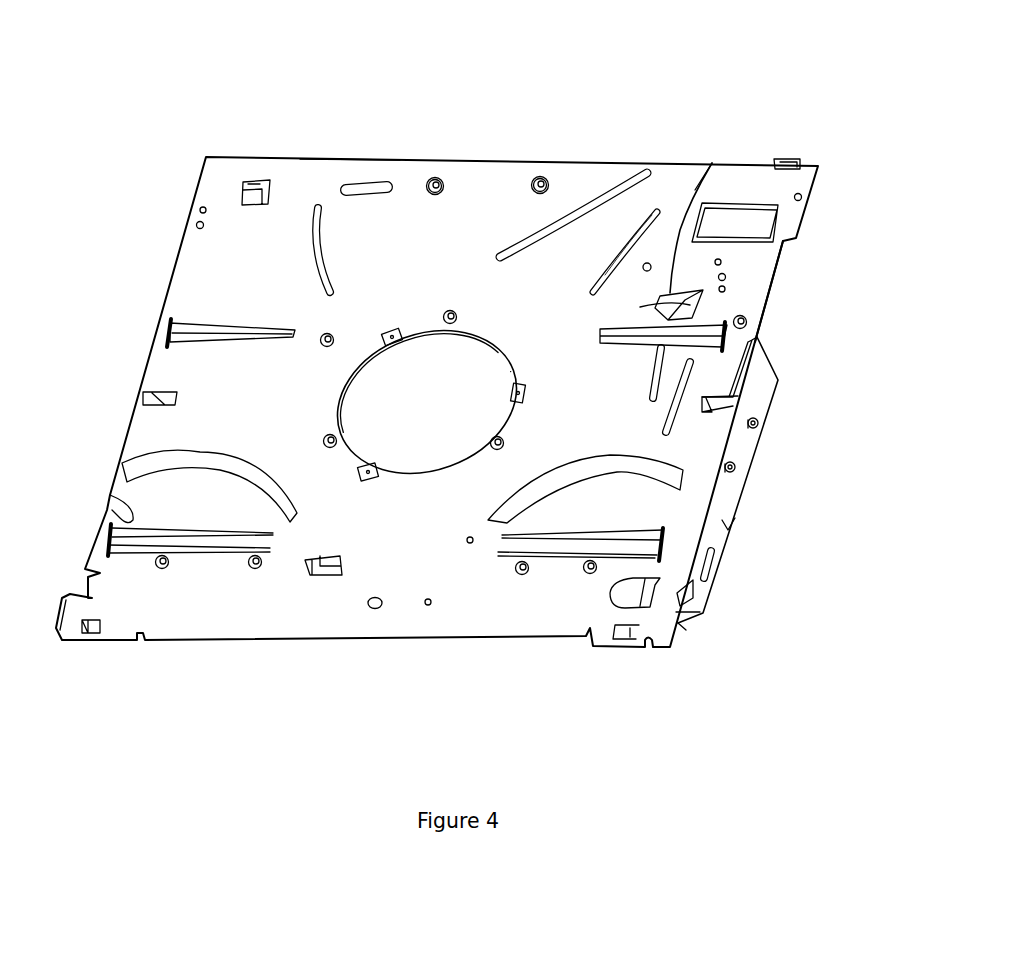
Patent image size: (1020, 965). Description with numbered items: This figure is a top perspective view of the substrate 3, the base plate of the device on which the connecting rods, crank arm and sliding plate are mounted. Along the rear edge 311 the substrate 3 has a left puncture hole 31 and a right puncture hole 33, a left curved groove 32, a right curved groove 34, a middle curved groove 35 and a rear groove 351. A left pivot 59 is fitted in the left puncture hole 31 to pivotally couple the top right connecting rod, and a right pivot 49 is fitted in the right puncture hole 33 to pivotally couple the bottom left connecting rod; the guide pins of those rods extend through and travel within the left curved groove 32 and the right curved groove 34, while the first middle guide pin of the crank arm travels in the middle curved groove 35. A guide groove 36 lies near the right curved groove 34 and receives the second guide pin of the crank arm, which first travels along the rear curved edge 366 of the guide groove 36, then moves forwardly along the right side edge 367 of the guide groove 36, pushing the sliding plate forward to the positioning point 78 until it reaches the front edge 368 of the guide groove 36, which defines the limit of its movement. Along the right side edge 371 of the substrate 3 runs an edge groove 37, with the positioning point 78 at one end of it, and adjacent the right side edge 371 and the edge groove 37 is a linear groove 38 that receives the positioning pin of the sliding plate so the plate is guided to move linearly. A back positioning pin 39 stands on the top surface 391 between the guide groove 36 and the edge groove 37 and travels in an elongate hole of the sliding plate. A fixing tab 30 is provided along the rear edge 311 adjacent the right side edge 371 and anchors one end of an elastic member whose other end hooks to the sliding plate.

The substrate 3 is at (502, 703).
The fixing tab 30 is at (786, 158).
The left puncture hole 31 is at (444, 184).
The left curved groove 32 is at (316, 205).
The right puncture hole 33 is at (549, 183).
The right curved groove 34 is at (654, 210).
The middle curved groove 35 is at (635, 176).
The guide groove 36 is at (703, 293).
The edge groove 37 is at (764, 308).
The linear groove 38 is at (668, 428).
The back positioning pin 39 is at (758, 339).
The right pivot 49 is at (539, 181).
The left pivot 59 is at (434, 182).
The positioning point 78 is at (712, 405).
The rear edge 311 is at (350, 157).
The rear groove 351 is at (368, 181).
The rear curved edge 366 is at (712, 163).
The right side edge of the guide groove 367 is at (705, 303).
The front edge of the guide groove 368 is at (660, 305).
The right side edge 371 is at (800, 218).
The top surface 391 is at (432, 273).